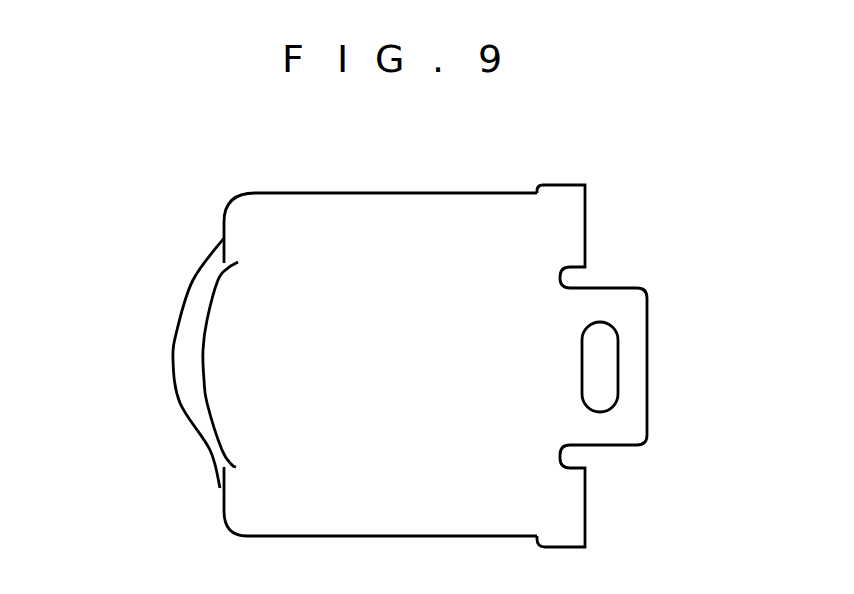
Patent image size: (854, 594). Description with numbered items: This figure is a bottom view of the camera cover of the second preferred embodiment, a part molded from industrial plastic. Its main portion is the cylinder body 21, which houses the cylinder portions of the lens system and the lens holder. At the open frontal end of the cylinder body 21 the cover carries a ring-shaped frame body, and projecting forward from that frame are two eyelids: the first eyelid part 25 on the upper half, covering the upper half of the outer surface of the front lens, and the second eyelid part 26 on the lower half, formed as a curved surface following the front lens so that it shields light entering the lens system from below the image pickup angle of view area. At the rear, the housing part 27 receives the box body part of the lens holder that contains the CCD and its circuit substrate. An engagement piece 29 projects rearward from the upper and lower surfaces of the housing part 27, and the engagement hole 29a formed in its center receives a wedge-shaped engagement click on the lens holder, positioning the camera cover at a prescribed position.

The cylinder body 21 is at (420, 208).
The first eyelid part 25 is at (190, 348).
The second eyelid part 26 is at (222, 392).
The housing part 27 is at (578, 222).
The engagement piece 29 is at (649, 302).
The engagement hole 29a is at (600, 367).